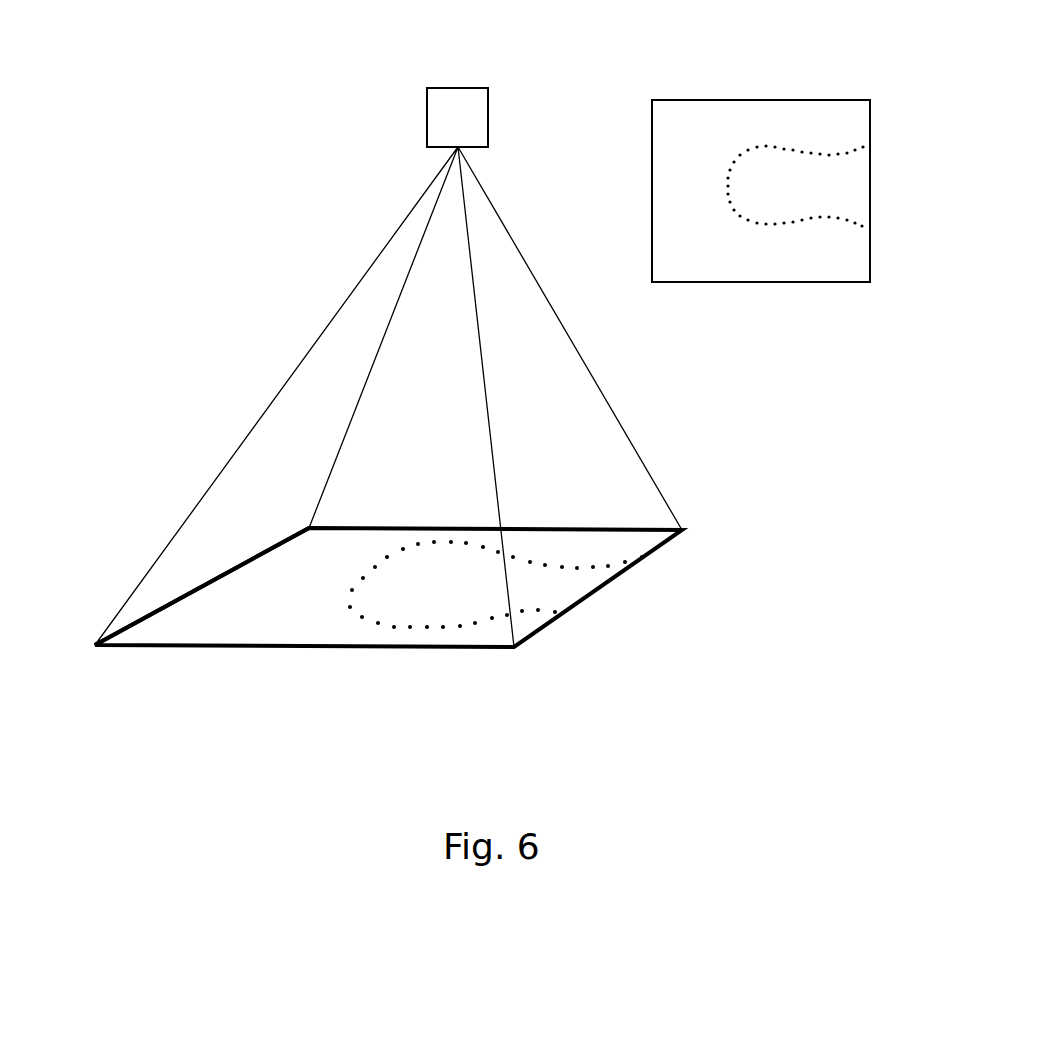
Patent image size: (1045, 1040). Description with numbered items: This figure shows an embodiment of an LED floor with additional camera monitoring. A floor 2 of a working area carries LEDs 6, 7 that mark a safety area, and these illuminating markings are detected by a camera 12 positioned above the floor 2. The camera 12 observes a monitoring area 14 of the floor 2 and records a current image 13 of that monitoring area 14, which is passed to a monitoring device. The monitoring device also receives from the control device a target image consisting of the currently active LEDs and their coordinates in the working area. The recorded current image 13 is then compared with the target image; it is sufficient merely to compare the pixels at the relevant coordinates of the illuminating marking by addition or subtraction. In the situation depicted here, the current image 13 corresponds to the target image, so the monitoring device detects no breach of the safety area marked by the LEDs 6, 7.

The floor 2 is at (145, 650).
The LED 6 is at (241, 588).
The LED 7 is at (467, 627).
The camera 12 is at (422, 102).
The current image 13 is at (853, 98).
The monitoring area 14 is at (318, 333).